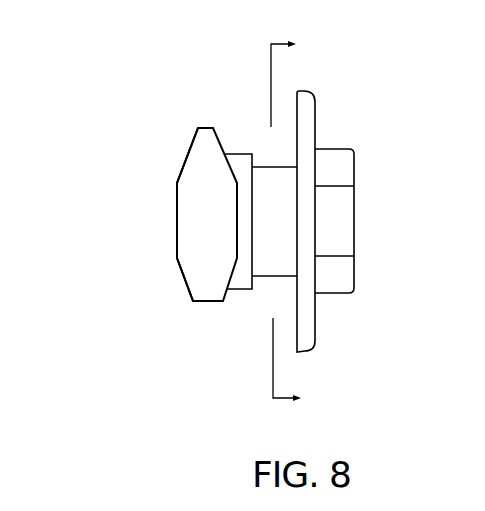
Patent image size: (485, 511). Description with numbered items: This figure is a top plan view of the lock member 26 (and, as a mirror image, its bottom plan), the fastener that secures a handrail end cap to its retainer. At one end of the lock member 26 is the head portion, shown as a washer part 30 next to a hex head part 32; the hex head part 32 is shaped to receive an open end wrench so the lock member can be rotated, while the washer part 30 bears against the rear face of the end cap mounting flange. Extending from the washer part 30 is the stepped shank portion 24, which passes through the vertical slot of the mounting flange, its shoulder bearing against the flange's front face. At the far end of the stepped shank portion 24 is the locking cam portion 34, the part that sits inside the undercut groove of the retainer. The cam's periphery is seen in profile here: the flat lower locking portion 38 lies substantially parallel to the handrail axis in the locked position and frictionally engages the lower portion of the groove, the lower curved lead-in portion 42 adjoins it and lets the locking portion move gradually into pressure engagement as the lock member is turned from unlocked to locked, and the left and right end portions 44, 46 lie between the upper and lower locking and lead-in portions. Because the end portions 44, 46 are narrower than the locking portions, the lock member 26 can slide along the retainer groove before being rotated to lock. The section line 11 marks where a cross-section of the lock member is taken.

The section line 11- 11 is at (299, 222).
The stepped shank portion 24 is at (273, 277).
The lock member 26 is at (190, 126).
The washer part 30 is at (317, 315).
The hex head part 32 is at (343, 238).
The locking cam portion 34 is at (176, 222).
The lower locking portion 38 is at (207, 263).
The lower curved lead-in portion 42 is at (200, 173).
The left end portion 44 is at (207, 127).
The right end portion 46 is at (205, 302).